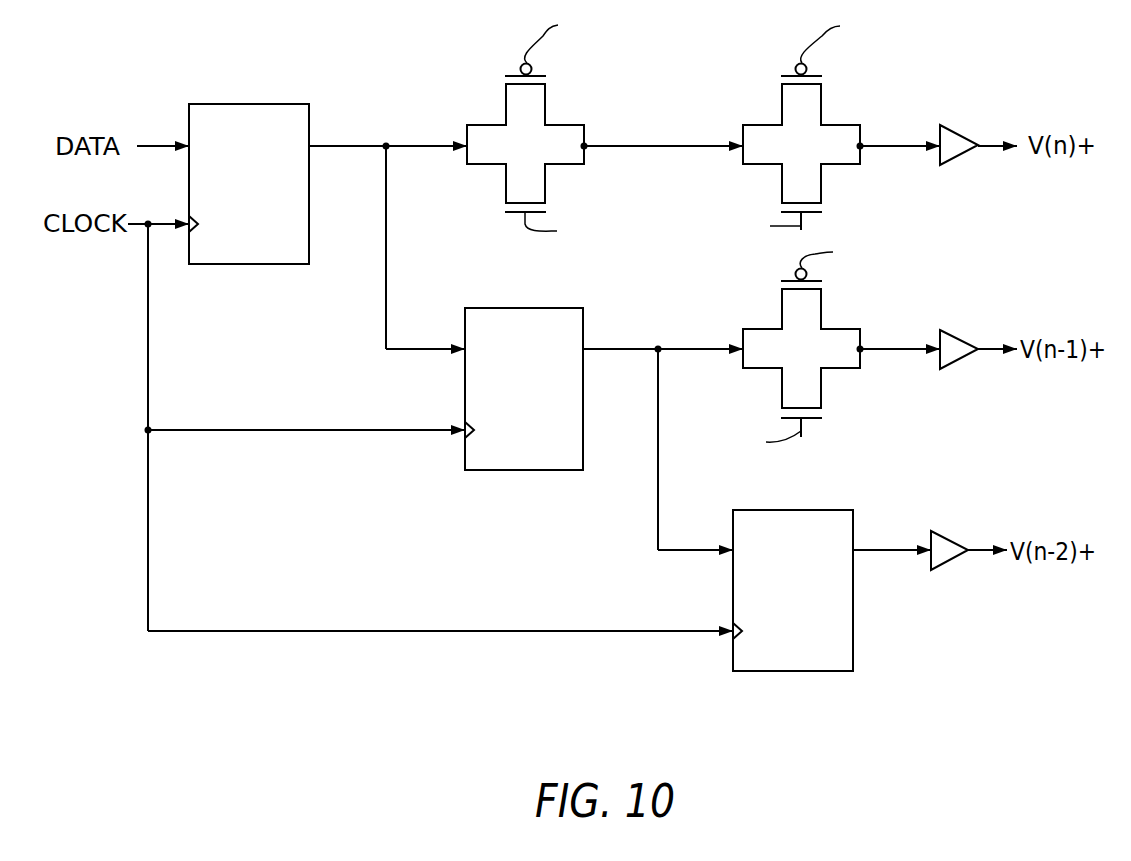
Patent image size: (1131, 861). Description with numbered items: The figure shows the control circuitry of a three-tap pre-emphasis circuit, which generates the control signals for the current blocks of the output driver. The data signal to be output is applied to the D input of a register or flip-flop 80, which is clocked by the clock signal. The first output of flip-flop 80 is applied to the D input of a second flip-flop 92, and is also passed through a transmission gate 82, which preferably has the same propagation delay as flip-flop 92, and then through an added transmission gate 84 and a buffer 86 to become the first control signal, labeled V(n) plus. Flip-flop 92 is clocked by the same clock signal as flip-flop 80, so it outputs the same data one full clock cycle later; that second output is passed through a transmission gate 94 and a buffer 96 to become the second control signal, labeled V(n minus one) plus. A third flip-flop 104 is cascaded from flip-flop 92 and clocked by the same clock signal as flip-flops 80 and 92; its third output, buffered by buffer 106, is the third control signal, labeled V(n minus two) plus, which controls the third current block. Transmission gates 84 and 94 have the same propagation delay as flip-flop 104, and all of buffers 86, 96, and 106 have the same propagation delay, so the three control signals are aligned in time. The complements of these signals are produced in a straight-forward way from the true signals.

The flip-flop 80 is at (257, 104).
The transmission gate 82 is at (566, 106).
The transmission gate 84 is at (848, 106).
The buffer 86 is at (965, 136).
The flip-flop 92 is at (524, 308).
The transmission gate 94 is at (844, 389).
The buffer 96 is at (955, 366).
The flip-flop 104 is at (786, 671).
The buffer 106 is at (944, 566).